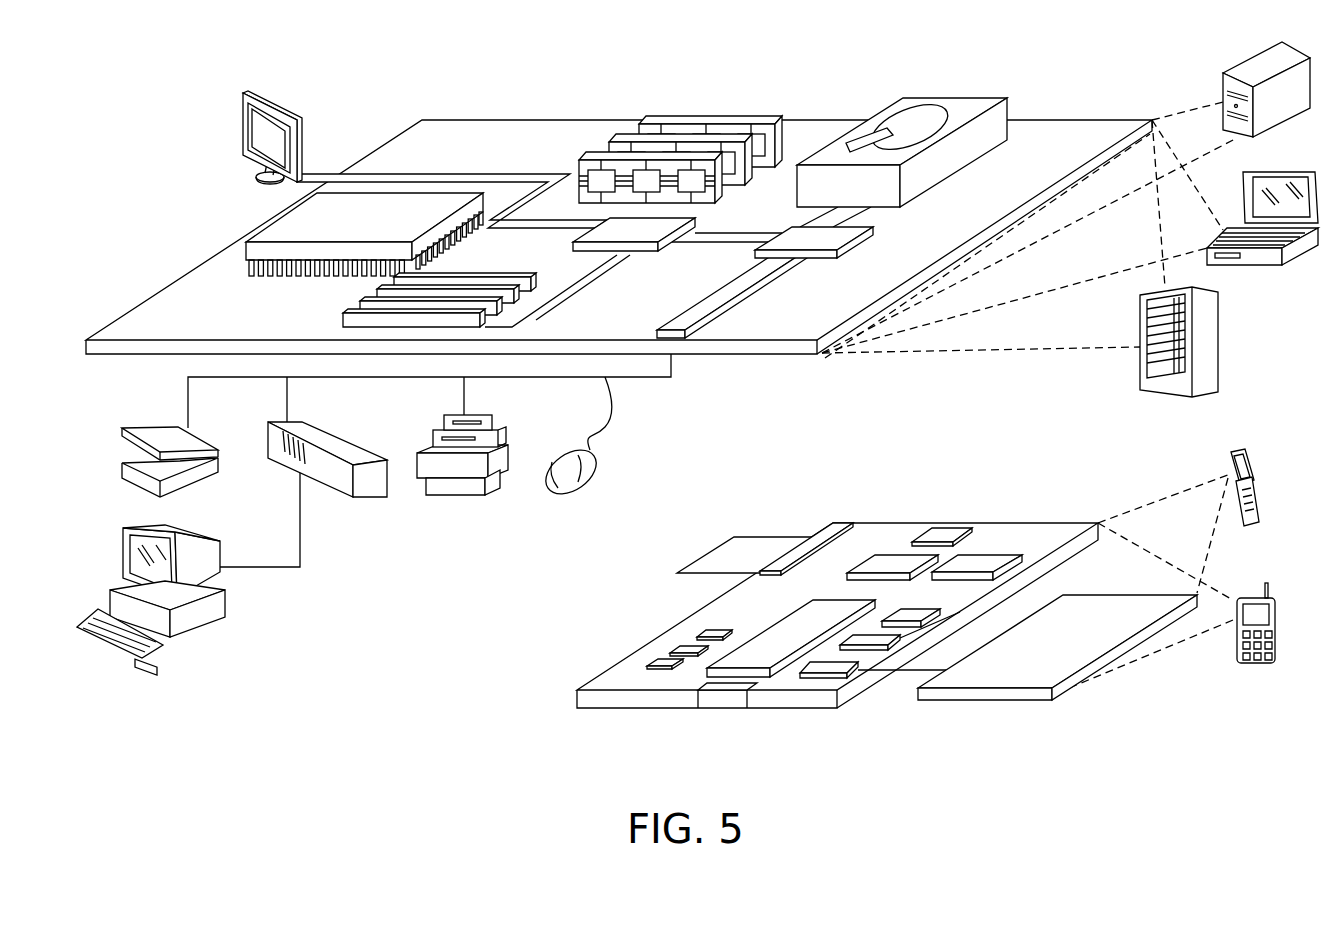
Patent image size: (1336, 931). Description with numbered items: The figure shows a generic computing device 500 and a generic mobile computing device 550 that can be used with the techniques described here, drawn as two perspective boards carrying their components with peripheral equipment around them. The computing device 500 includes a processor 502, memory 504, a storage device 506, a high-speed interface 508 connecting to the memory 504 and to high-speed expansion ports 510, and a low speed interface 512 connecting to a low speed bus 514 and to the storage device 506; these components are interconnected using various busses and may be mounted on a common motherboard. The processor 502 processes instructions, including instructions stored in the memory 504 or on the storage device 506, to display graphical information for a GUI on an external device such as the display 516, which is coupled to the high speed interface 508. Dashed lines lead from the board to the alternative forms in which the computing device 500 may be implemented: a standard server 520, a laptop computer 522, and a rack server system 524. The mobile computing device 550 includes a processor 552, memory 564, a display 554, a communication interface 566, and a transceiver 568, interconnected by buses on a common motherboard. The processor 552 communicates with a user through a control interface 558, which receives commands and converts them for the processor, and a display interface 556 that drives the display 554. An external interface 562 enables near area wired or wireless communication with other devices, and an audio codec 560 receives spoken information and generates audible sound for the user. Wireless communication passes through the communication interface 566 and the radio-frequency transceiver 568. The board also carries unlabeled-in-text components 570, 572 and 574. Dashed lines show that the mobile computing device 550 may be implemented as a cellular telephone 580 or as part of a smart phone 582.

The computing device 500 is at (374, 66).
The processor 502 is at (272, 222).
The memory 504 is at (713, 117).
The storage device 506 is at (943, 97).
The high-speed interface 508 is at (647, 230).
The high-speed expansion ports 510 is at (368, 302).
The low speed interface 512 is at (788, 233).
The low speed bus 514 is at (678, 324).
The display 516 is at (247, 92).
The standard server 520 is at (1245, 68).
The laptop computer 522 is at (1298, 167).
The rack server system 524 is at (1220, 342).
The mobile computing device 550 is at (528, 722).
The processor 552 is at (760, 643).
The display 554 is at (1097, 610).
The display interface 556 is at (853, 665).
The control interface 558 is at (877, 640).
The audio codec 560 is at (917, 605).
The external interface 562 is at (722, 693).
The memory 564 is at (678, 645).
The communication interface 566 is at (893, 555).
The transceiver 568 is at (983, 555).
The antenna module 570 is at (945, 530).
The battery 572 is at (817, 535).
The cover 574 is at (737, 535).
The cellular telephone 580 is at (1243, 450).
The smart phone 582 is at (1250, 593).